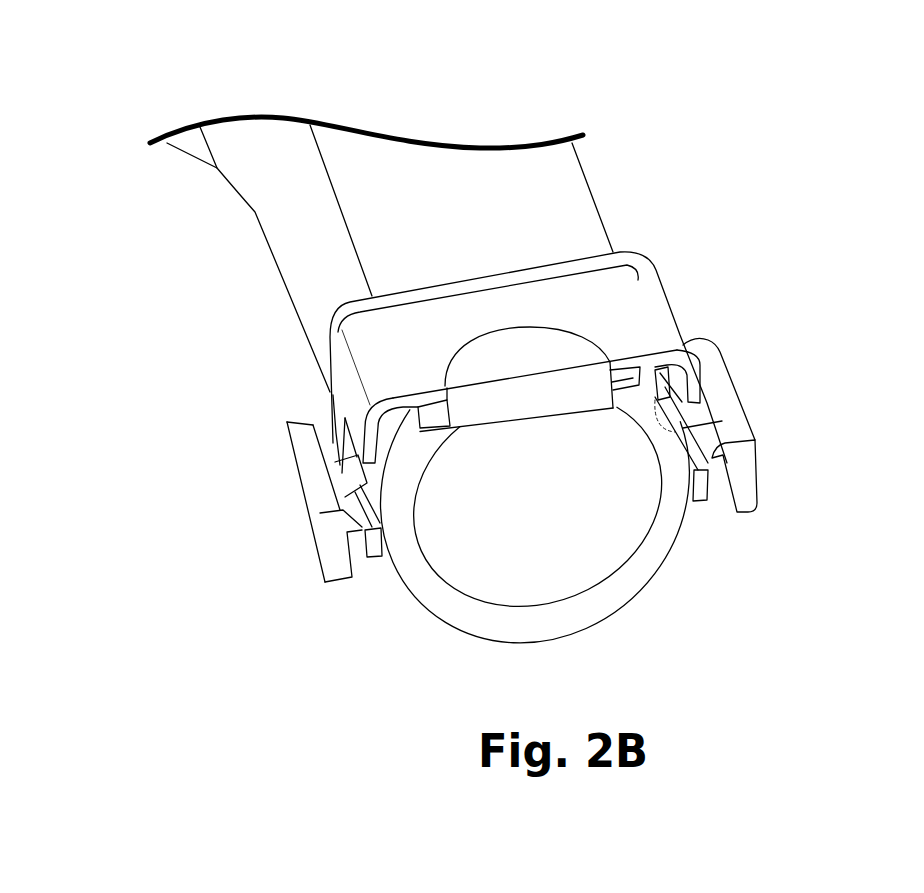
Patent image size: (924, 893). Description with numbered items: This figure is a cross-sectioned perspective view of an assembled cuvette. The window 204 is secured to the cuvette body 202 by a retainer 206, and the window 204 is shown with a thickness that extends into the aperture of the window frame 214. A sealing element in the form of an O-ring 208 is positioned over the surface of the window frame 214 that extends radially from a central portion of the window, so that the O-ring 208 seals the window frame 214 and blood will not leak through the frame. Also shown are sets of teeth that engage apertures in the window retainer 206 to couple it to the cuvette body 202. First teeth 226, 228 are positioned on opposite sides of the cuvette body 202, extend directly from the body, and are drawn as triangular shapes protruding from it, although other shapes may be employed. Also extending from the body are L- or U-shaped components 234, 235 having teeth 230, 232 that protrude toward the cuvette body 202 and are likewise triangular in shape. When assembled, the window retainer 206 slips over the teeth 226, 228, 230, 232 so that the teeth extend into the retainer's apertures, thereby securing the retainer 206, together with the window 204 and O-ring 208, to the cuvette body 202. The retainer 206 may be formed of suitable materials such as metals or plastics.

The cuvette body 202 is at (446, 170).
The window 204 is at (543, 353).
The retainer 206 is at (632, 283).
The O-ring 208 is at (683, 345).
The window frame 214 is at (450, 438).
The first tooth 226 is at (740, 428).
The first tooth 228 is at (333, 416).
The tooth 230 is at (708, 501).
The tooth 232 is at (365, 525).
The L- or U-shaped component 234 is at (738, 458).
The L- or U-shaped component 235 is at (313, 528).